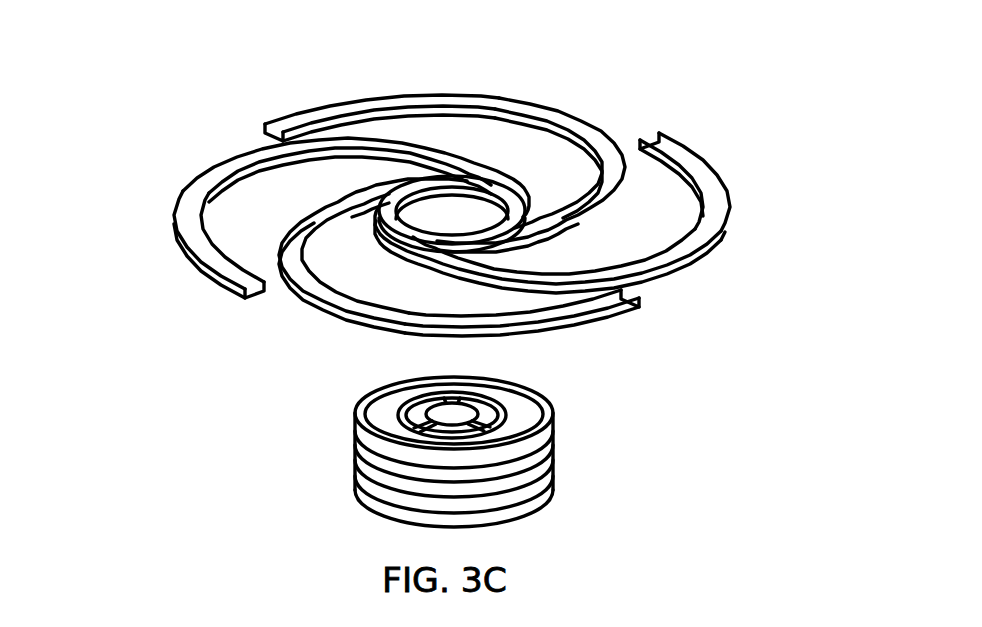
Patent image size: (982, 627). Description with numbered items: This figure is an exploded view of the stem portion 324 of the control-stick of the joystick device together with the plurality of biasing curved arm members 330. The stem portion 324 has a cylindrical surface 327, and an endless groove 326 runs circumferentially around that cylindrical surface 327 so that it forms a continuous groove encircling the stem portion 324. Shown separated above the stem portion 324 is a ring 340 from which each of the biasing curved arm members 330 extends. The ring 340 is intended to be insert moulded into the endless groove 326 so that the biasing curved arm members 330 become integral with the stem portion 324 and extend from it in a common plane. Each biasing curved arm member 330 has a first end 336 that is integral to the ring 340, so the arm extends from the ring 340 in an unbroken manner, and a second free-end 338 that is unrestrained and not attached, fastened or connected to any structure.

The stem portion 324 is at (457, 452).
The endless groove 326 is at (373, 470).
The cylindrical surface 327 is at (377, 452).
The biasing curved arm members 330 is at (537, 97).
The first end 336 is at (443, 163).
The second free-end 338 is at (273, 131).
The ring 340 is at (513, 187).